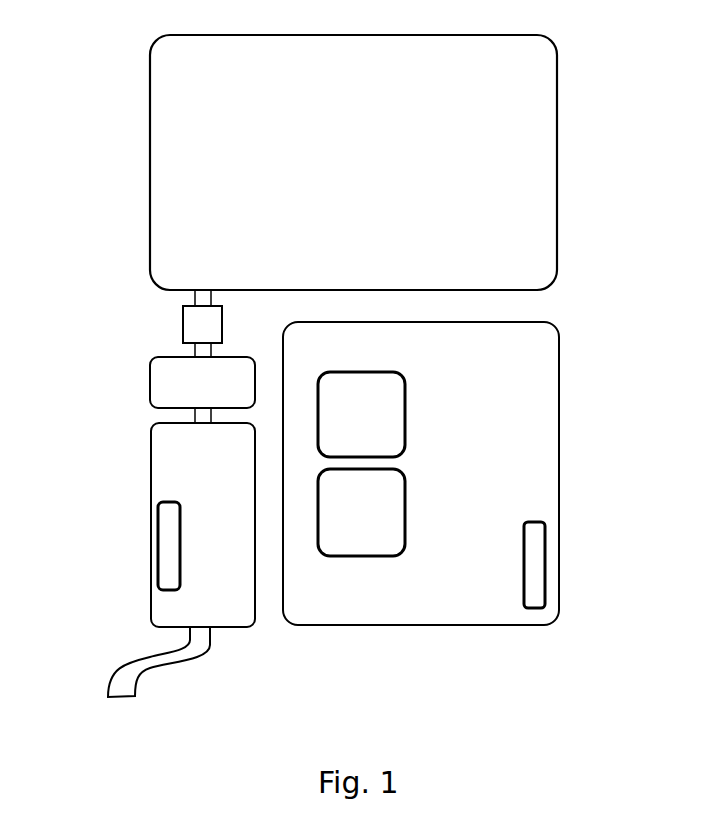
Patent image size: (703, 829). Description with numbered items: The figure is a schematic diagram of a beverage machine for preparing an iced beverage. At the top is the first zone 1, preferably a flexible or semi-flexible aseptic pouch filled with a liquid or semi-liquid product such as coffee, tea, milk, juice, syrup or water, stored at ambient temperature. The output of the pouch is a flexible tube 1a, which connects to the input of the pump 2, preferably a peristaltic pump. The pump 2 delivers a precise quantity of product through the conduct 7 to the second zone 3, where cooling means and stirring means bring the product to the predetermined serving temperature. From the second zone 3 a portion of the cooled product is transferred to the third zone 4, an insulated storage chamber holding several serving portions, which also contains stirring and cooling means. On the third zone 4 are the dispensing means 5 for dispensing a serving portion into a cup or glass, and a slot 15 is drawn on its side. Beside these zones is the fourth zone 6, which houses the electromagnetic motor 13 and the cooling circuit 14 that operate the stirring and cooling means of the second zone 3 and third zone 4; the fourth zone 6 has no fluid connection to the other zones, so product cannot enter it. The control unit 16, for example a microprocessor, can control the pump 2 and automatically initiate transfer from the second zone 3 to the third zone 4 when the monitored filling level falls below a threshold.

The first zone 1 is at (557, 57).
The flexible tube 1a is at (215, 298).
The pump 2 is at (183, 322).
The conduct 7 is at (210, 350).
The second zone 3 is at (150, 385).
The third zone 4 is at (151, 505).
The operating switch of dispensing unit 15 is at (158, 555).
The dispensing means 5 is at (108, 664).
The fourth zone 6 is at (559, 410).
The electromagnetic motor 13 is at (405, 372).
The cooling circuit 14 is at (405, 510).
The control unit 16 is at (524, 575).